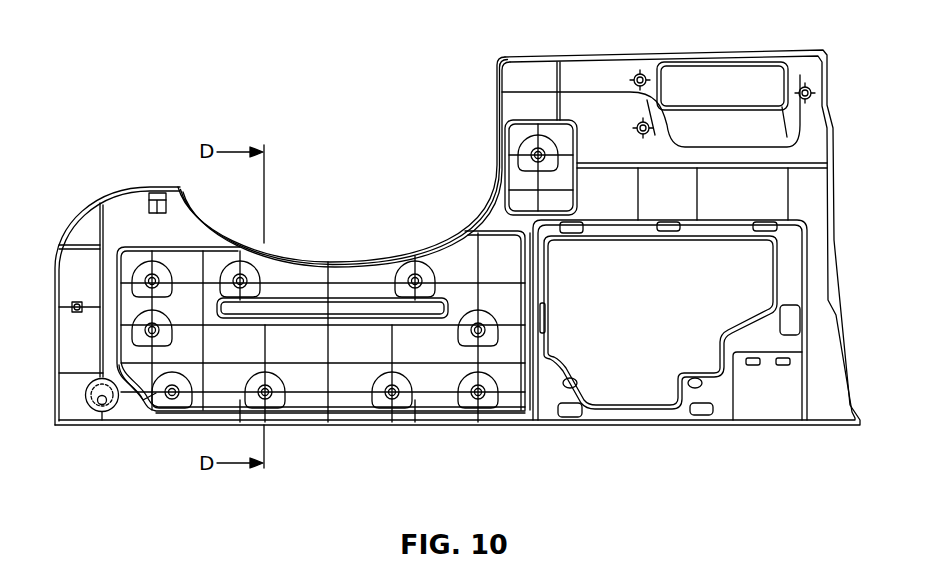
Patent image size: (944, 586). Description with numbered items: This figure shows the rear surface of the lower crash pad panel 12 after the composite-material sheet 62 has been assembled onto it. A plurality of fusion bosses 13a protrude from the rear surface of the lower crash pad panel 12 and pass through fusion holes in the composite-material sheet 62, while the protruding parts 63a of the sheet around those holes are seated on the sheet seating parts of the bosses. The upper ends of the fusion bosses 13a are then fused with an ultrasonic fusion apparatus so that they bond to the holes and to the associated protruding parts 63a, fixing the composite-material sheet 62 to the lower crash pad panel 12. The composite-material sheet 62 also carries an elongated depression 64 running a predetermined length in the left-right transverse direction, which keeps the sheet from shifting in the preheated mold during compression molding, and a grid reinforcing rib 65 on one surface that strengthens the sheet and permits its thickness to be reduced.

The lower crash pad panel 12 is at (155, 178).
The composite-material sheet 62 is at (118, 238).
The elongated depression 64 is at (355, 308).
The grid reinforcing rib 65 is at (466, 272).
The protruding part 63a is at (142, 410).
The fusion boss 13a is at (173, 400).